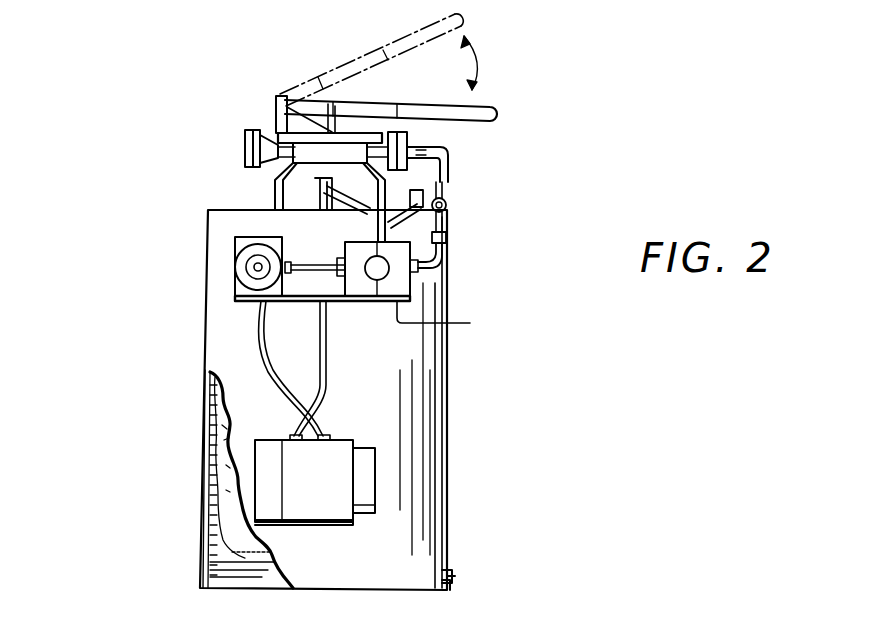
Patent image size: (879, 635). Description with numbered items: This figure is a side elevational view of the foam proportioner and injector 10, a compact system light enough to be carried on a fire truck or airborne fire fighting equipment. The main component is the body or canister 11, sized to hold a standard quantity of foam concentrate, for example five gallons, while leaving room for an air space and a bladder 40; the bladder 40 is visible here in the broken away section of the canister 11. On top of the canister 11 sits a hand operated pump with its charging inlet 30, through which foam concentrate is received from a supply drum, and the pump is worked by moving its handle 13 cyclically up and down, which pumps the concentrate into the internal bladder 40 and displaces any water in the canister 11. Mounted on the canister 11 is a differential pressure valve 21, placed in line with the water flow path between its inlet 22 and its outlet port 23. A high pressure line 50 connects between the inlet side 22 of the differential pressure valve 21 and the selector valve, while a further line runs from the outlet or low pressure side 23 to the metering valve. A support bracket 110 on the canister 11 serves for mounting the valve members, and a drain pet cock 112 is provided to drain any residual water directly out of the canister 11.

The foam proportioner and injector 10 is at (212, 263).
The body or canister 11 is at (213, 348).
The differential pressure valve 21 is at (353, 440).
The inlet 22 is at (272, 438).
The outlet port 23 is at (370, 482).
The charging inlet 30 is at (245, 145).
The bladder 40 is at (241, 547).
The high pressure line 50 is at (328, 357).
The support bracket 110 is at (393, 322).
The drain pet cock 112 is at (445, 568).
The handle 13 is at (700, 630).